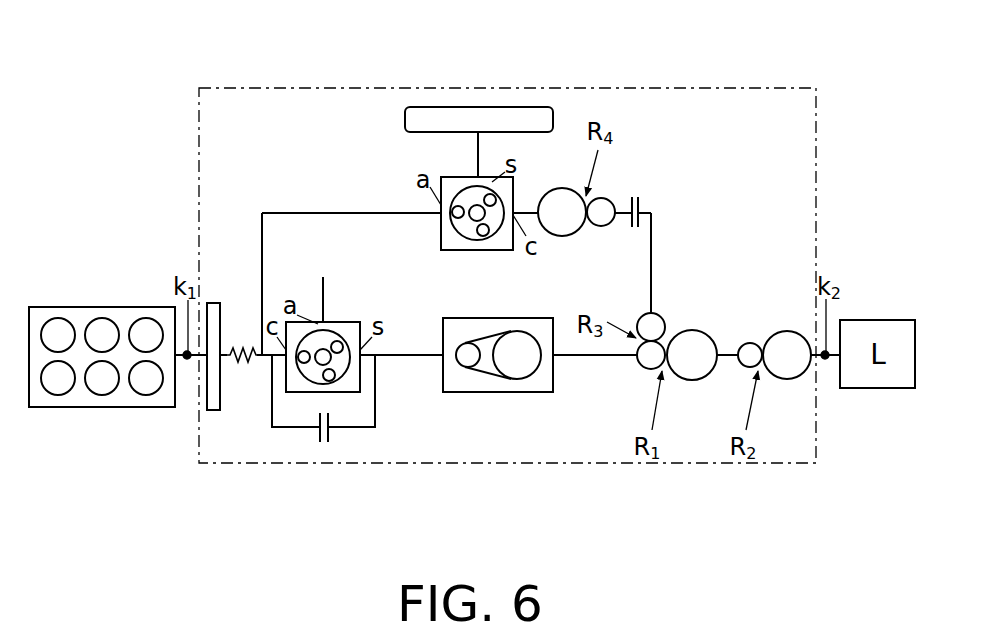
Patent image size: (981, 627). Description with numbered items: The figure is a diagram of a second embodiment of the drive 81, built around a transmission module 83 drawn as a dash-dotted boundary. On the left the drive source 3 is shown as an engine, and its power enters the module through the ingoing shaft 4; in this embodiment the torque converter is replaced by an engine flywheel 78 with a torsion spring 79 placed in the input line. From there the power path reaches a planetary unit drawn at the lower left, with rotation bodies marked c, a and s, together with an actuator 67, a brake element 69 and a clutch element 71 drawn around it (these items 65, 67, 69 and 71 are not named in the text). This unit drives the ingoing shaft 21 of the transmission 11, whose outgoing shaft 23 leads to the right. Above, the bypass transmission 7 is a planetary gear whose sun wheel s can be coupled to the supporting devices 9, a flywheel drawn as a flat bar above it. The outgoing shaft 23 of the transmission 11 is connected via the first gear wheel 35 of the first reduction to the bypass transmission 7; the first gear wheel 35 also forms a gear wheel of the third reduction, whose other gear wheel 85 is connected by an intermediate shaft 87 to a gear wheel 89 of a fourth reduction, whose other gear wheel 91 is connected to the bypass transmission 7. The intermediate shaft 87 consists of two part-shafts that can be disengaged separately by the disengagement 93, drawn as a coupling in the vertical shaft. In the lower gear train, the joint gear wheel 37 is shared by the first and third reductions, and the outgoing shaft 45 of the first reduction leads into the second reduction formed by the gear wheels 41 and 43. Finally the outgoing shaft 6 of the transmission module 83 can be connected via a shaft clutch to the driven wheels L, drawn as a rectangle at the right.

The drive source 3 is at (95, 305).
The ingoing shaft 4 is at (196, 362).
The outgoing shaft 6 is at (818, 362).
The bypass transmission 7 is at (463, 252).
The supporting devices 9 is at (498, 118).
The transmission 11 is at (505, 393).
The ingoing shaft of the transmission 21 is at (428, 357).
The outgoing shaft of the transmission 23 is at (570, 358).
The first gear wheel of the first reduction 35 is at (645, 362).
The joint gear wheel 37 is at (690, 362).
The gear wheel 41 is at (752, 347).
The gear wheel 43 is at (785, 362).
The outgoing shaft of the first reduction 45 is at (728, 350).
The planetary gear set 65 is at (355, 322).
The brake / clutch actuator 67 is at (324, 275).
The brake 69 is at (315, 300).
The clutch 71 is at (322, 447).
The engine flywheel 78 is at (215, 303).
The torsion spring 79 is at (243, 348).
The drive 81 is at (152, 137).
The transmission module 83 is at (410, 86).
The gear wheel of the third reduction 85 is at (658, 320).
The intermediate shaft 87 is at (655, 216).
The gear wheel of the fourth reduction 89 is at (605, 203).
The gear wheel of the fourth reduction 91 is at (560, 200).
The disengagement 93 is at (632, 232).